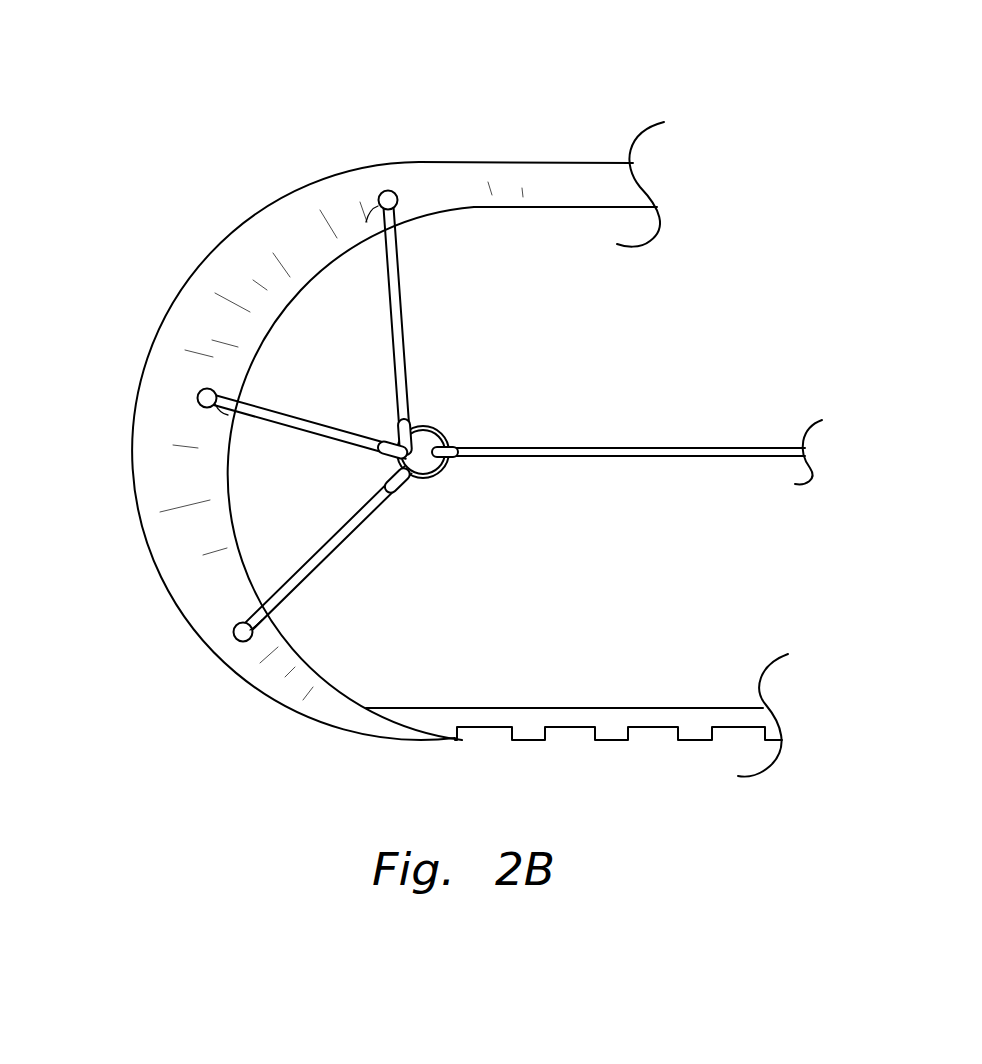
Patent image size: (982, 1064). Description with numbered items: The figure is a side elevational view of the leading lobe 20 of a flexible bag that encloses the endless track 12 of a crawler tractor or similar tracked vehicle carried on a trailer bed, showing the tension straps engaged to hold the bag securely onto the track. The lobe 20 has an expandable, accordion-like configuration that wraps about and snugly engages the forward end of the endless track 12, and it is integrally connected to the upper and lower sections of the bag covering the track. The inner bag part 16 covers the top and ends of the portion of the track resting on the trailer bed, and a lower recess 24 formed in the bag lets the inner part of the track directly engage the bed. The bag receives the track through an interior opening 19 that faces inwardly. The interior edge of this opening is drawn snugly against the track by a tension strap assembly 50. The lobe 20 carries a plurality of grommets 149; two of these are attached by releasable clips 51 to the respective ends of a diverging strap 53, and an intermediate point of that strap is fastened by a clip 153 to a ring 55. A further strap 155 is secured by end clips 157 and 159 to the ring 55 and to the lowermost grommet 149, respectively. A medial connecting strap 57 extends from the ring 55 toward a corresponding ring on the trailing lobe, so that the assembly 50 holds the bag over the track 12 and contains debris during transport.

The endless track 12 is at (577, 706).
The inner bag part 16 is at (468, 181).
The interior opening 19 is at (605, 207).
The leading lobe 20 is at (133, 433).
The lower recess 24 is at (571, 759).
The tension strap assembly 50 is at (650, 446).
The releasable clips 51 is at (377, 207).
The diverging strap 53 is at (266, 430).
The ring 55 is at (438, 430).
The medial connecting strap 57 is at (551, 458).
The grommets 149 is at (380, 193).
The clip 153 is at (407, 457).
The strap 155 is at (342, 558).
The end clip 157 is at (412, 478).
The end clip 159 is at (252, 624).